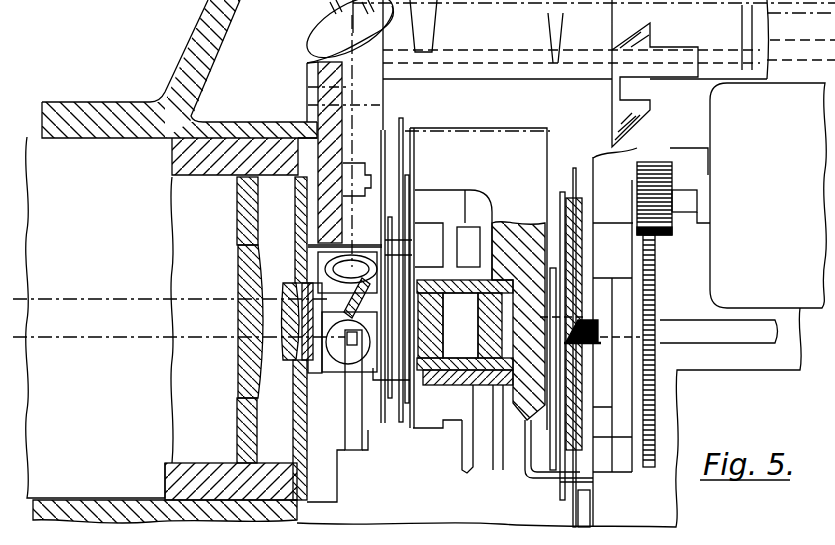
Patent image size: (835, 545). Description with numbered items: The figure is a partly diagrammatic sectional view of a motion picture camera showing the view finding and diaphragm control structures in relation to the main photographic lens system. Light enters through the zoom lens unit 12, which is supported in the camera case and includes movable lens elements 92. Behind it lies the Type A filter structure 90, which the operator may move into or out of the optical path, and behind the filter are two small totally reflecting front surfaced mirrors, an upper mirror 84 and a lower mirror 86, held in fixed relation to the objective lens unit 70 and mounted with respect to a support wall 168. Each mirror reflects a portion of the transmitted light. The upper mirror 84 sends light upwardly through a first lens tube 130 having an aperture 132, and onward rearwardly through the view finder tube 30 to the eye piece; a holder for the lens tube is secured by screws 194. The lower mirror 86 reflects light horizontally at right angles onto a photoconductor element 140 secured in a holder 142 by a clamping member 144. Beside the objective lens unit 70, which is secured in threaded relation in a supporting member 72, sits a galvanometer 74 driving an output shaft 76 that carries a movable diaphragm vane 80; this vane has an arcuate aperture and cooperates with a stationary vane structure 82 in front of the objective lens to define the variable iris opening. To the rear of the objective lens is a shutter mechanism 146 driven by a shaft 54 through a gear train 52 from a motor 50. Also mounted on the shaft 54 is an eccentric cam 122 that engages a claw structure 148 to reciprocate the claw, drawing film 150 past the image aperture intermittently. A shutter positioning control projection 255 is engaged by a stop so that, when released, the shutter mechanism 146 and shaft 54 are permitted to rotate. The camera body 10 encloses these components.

The arm 10 is at (192, 30).
The zoom lens unit 12 is at (80, 170).
The view finder tube 30 is at (483, 82).
The motor 50 is at (797, 210).
The gear train 52 is at (660, 162).
The shaft 54 is at (770, 345).
The objective lens unit 70 is at (495, 405).
The supporting member 72 is at (473, 462).
The galvanometer 74 is at (447, 420).
The output shaft 76 is at (400, 395).
The movable diaphragm vane 80 is at (398, 125).
The stationary vane structure 82 is at (410, 207).
The upper mirror 84 is at (300, 280).
The lower mirror 86 is at (340, 390).
The Type A filter structure 90 is at (298, 392).
The movable lens elements 92 is at (302, 290).
The eccentric cam 122 is at (598, 300).
The first lens tube 130 is at (320, 100).
The aperture 132 is at (352, 268).
The photoconductor element 140 is at (388, 427).
The holder 142 is at (340, 372).
The clamping member 144 is at (365, 460).
The shutter mechanism 146 is at (565, 205).
The claw structure 148 is at (597, 330).
The film 150 is at (578, 180).
The support wall 168 is at (331, 138).
The screws 194 is at (362, 180).
The shutter positioning control projection 255 is at (618, 393).